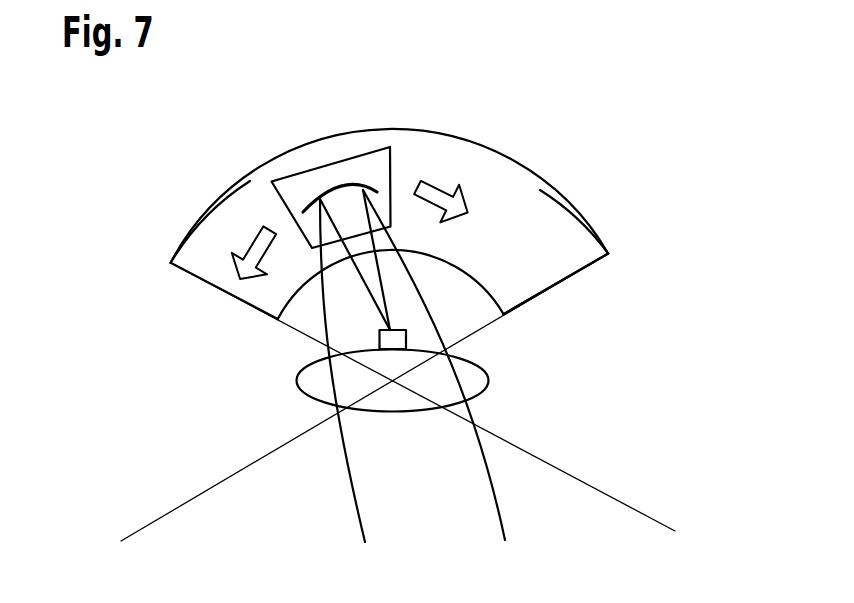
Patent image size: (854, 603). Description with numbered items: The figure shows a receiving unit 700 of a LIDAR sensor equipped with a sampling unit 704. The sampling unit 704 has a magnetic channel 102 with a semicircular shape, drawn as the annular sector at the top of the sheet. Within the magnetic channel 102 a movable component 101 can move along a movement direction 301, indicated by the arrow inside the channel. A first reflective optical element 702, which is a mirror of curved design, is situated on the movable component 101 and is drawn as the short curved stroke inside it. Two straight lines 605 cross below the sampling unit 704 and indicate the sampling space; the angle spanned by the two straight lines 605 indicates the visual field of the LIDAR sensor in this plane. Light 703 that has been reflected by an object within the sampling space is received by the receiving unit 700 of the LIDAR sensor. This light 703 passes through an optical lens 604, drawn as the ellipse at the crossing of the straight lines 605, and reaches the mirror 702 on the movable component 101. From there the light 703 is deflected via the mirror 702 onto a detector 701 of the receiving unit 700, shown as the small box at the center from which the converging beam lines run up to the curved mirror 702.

The receiving unit 700 is at (172, 176).
The sampling unit 704 is at (196, 224).
The magnetic channel 102 is at (543, 217).
The movable component 101 is at (300, 183).
The first reflective optical element 702 is at (346, 186).
The movement direction 301 is at (437, 187).
The detector 701 is at (379, 338).
The optical lens 604 is at (488, 378).
The light 703 is at (490, 477).
The straight lines 605 is at (195, 495).